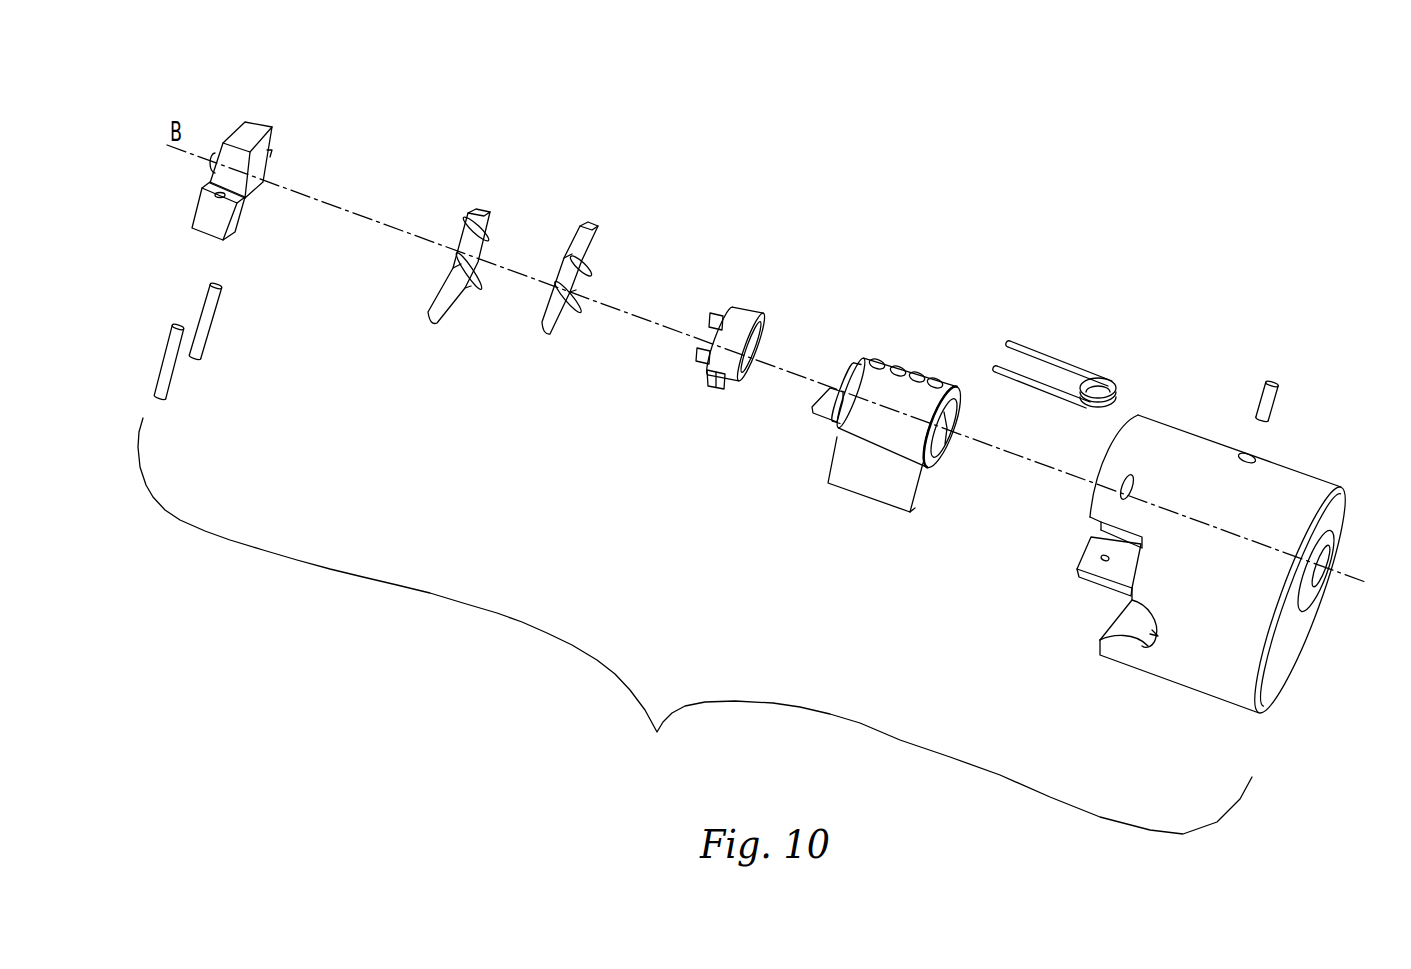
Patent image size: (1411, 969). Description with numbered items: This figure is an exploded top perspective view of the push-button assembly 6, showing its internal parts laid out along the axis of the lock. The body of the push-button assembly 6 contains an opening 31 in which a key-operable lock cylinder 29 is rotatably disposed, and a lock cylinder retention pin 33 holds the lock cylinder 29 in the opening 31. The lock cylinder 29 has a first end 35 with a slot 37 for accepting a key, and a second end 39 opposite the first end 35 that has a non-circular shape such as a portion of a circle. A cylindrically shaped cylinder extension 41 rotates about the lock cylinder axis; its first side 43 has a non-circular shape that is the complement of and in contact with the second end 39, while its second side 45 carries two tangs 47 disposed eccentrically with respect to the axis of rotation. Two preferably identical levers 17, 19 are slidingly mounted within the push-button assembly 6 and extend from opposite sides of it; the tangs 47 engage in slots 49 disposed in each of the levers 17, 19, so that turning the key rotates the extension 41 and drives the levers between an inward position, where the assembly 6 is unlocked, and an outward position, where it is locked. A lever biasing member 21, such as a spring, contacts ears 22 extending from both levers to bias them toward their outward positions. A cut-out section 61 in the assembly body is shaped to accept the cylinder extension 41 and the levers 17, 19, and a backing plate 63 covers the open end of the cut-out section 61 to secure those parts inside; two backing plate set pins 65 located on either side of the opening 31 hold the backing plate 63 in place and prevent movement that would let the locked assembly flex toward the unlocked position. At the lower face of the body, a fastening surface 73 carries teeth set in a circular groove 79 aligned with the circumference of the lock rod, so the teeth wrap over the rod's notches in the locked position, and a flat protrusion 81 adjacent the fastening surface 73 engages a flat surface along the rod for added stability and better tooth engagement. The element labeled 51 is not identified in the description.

The push-button assembly 6 is at (756, 624).
The lever 17 is at (578, 302).
The lever 19 is at (445, 306).
The lever biasing member 21 is at (1052, 357).
The ears 22 is at (515, 262).
The lock cylinder 29 is at (890, 405).
The opening 31 is at (1314, 580).
The lock cylinder retention pin 33 is at (1272, 381).
The first end 35 is at (954, 458).
The slot 37 is at (958, 394).
The second end 39 is at (835, 378).
The cylinder extension 41 is at (734, 336).
The first side 43 is at (754, 344).
The second side 45 is at (708, 376).
The tangs 47 is at (697, 356).
The slots 49 is at (482, 244).
The lower slot 51 is at (470, 282).
The cut-out section 61 is at (1095, 542).
The backing plate 63 is at (253, 126).
The backing plate set pins 65 is at (192, 362).
The fastening surface 73 is at (1158, 635).
The circular groove 79 is at (1100, 640).
The flat protrusion 81 is at (1133, 618).